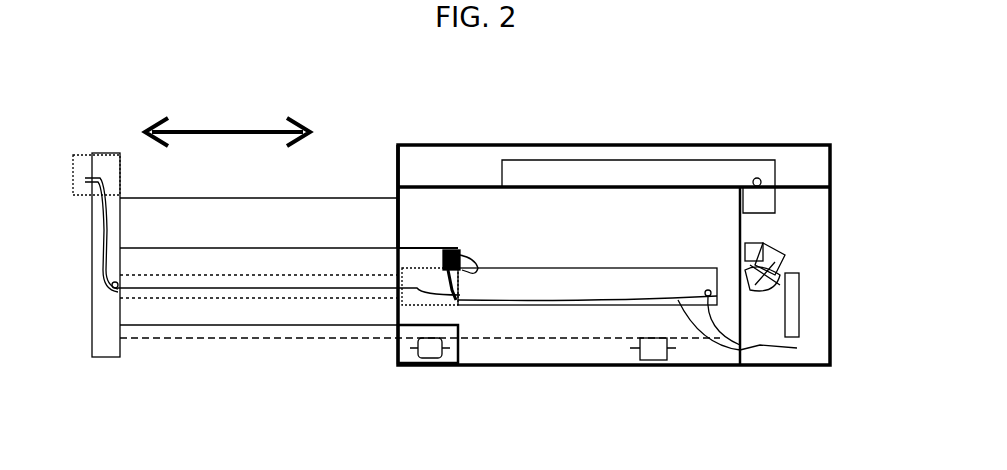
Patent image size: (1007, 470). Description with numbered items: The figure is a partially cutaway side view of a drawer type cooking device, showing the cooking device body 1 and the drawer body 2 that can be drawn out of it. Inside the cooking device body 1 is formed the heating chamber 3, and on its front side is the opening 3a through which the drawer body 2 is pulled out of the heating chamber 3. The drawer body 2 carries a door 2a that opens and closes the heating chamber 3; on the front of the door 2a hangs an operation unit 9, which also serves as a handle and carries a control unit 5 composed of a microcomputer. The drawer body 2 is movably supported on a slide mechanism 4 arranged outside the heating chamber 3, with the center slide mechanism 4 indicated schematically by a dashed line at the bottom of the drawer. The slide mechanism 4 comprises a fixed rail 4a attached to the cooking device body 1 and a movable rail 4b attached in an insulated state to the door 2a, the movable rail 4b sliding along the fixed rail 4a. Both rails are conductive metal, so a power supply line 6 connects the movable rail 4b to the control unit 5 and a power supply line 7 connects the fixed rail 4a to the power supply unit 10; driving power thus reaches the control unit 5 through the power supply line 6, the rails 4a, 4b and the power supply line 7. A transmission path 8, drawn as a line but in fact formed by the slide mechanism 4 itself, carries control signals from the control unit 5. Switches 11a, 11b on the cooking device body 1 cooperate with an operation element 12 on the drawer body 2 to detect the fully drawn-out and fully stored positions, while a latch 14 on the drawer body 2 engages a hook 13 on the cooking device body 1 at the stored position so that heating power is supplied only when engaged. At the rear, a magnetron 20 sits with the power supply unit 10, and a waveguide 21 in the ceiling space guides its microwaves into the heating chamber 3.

The cooking device body 1 is at (733, 147).
The drawer body 2 is at (203, 327).
The door 2a is at (98, 330).
The heating chamber 3 is at (506, 232).
The opening 3a is at (407, 215).
The slide mechanism 4 is at (253, 340).
The fixed rail 4a is at (535, 285).
The movable rail 4b is at (258, 275).
The control unit 5 is at (88, 153).
The power supply line 6 is at (110, 203).
The power supply line 7 is at (748, 348).
The transmission path 8 is at (345, 290).
The operation unit 9 is at (80, 153).
The power supply unit 10 is at (799, 320).
The switch 11a is at (432, 365).
The switch 11b is at (652, 362).
The operation element 12 is at (450, 333).
The hook 13 is at (787, 258).
The latch 14 is at (478, 268).
The magnetron 20 is at (760, 200).
The waveguide 21 is at (585, 173).